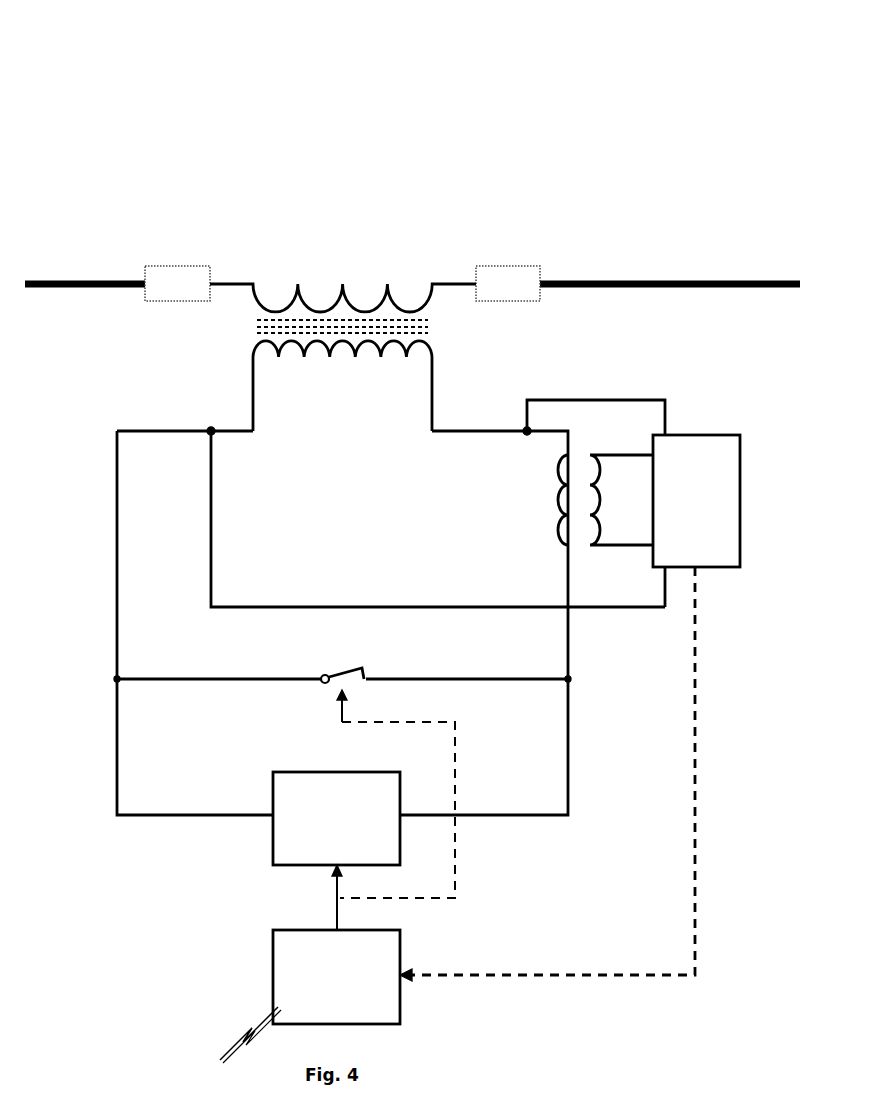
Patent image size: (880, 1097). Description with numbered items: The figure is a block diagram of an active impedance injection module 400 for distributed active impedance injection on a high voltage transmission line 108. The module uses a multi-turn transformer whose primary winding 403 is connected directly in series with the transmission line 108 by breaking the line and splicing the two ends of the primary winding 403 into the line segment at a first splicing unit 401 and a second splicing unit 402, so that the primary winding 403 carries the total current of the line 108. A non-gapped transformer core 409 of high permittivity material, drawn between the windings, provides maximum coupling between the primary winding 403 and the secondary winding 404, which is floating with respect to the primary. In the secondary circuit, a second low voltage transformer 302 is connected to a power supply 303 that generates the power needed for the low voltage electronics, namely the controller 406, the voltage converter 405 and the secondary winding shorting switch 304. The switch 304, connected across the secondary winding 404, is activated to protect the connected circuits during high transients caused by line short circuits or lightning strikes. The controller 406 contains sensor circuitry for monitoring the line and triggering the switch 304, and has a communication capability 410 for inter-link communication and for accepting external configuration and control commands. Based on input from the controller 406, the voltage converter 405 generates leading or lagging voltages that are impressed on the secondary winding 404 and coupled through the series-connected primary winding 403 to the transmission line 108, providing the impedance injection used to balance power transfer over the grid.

The active impedance injection module 400 is at (409, 140).
The HV transmission line 108 is at (40, 282).
The splicing unit 401 is at (176, 266).
The splicing unit 402 is at (515, 266).
The primary winding 403 is at (343, 283).
The secondary winding 404 is at (343, 357).
The transformer core 409 is at (428, 327).
The low voltage transformer 302 is at (587, 447).
The power supply 303 is at (683, 568).
The secondary winding shorting switch 304 is at (350, 665).
The voltage converter 405 is at (345, 771).
The controller 406 is at (273, 976).
The communication capability 410 is at (252, 1035).